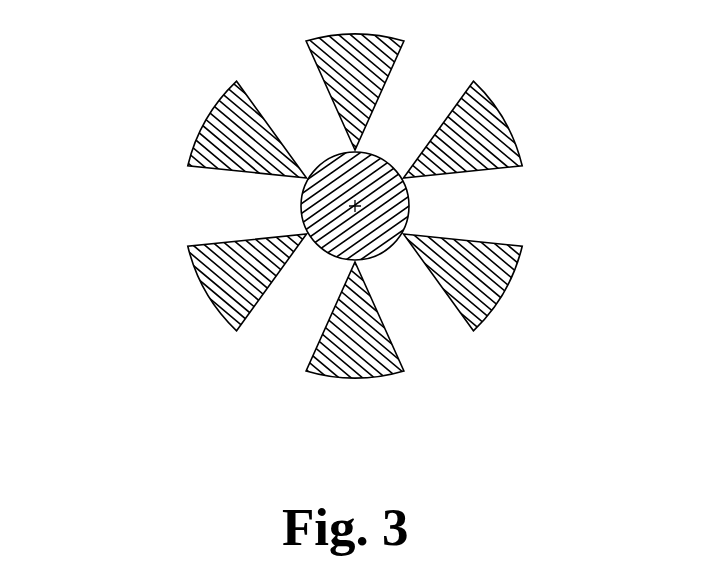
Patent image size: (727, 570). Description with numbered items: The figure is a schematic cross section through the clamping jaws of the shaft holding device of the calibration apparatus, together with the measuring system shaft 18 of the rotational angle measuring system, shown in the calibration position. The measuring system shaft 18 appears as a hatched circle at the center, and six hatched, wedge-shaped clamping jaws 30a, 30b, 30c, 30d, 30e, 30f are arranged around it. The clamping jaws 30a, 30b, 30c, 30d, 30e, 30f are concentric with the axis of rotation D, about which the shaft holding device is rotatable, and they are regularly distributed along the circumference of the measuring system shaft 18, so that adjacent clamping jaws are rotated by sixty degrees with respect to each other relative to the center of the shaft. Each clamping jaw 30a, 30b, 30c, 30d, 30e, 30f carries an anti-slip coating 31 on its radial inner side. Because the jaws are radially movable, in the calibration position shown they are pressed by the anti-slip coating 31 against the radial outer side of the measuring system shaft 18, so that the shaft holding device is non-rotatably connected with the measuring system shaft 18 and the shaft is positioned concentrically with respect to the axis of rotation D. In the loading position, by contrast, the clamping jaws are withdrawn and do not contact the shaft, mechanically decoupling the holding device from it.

The measuring system shaft 18 is at (300, 197).
The anti-slip coating 31 is at (347, 262).
The axis of rotation D is at (358, 207).
The clamping jaw 30a is at (207, 117).
The clamping jaw 30b is at (310, 50).
The clamping jaw 30c is at (506, 117).
The clamping jaw 30d is at (517, 278).
The clamping jaw 30e is at (362, 336).
The clamping jaw 30f is at (216, 272).